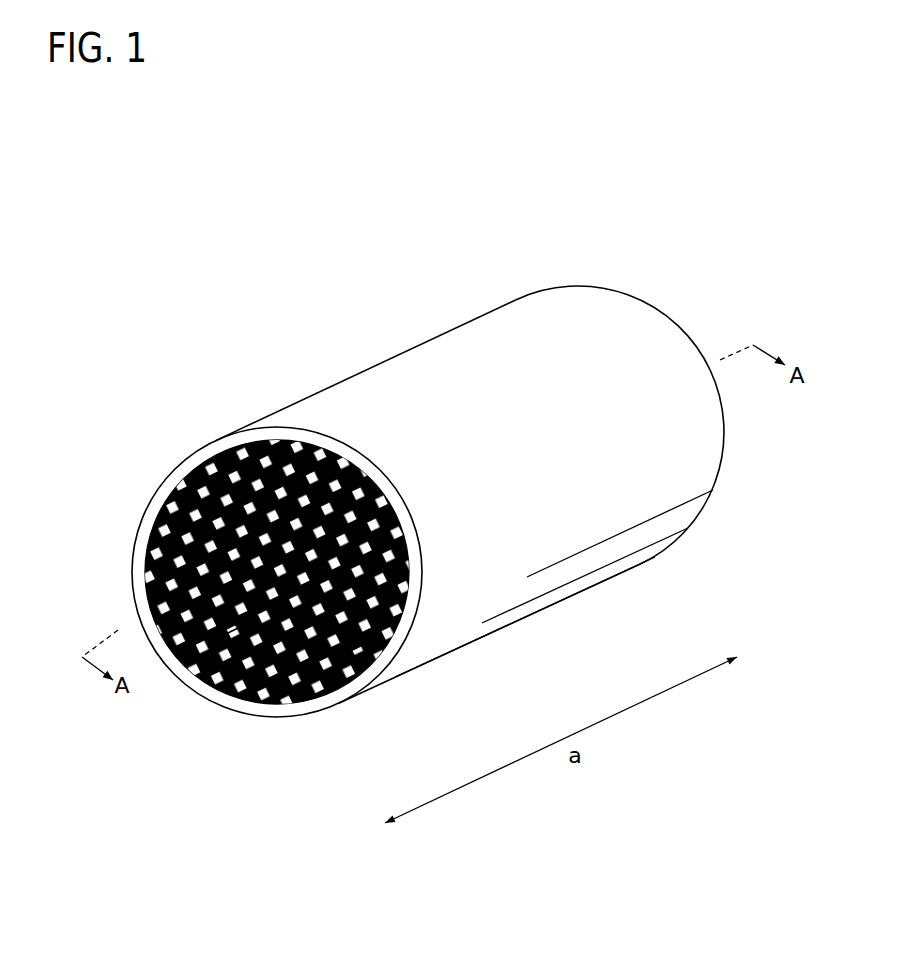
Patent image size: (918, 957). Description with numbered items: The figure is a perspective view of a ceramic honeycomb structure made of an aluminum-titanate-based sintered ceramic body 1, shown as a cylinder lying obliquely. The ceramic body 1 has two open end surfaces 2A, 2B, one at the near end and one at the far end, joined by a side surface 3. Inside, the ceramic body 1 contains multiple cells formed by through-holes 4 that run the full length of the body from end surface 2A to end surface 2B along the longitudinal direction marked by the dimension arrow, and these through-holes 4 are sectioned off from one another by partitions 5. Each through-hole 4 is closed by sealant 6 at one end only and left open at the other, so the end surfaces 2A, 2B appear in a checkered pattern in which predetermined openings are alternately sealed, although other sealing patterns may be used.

The ceramic body 1 is at (423, 467).
The end surface 2A is at (150, 495).
The end surface 2B is at (683, 308).
The side surface 3 is at (547, 578).
The through-holes 4 is at (277, 652).
The partitions 5 is at (232, 630).
The sealant 6 is at (355, 643).